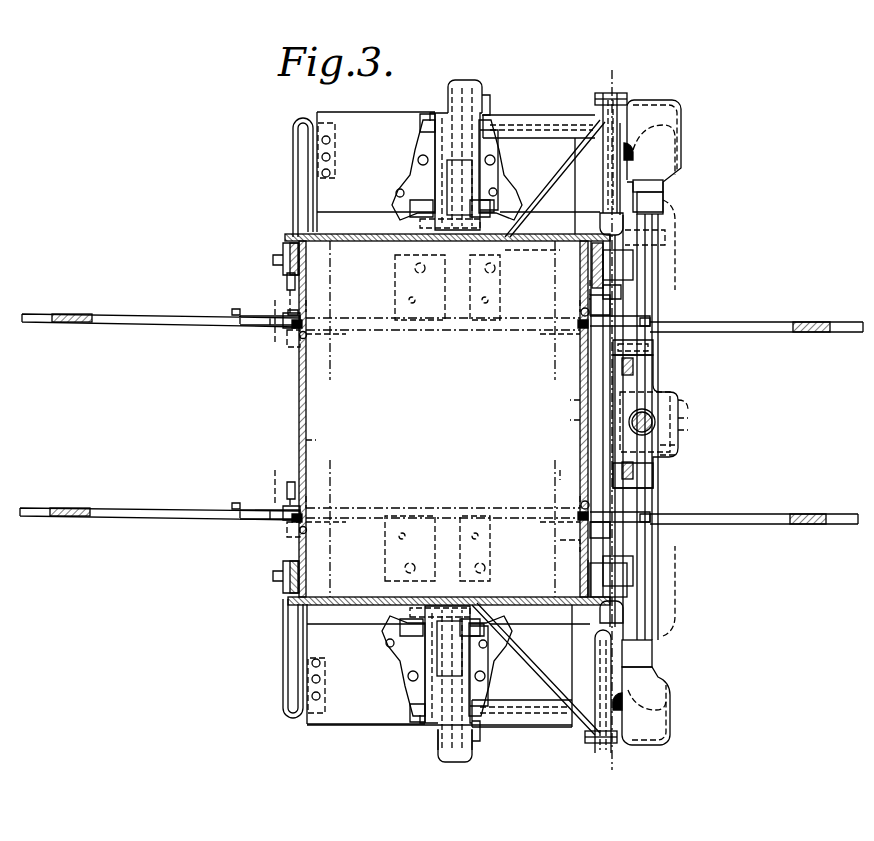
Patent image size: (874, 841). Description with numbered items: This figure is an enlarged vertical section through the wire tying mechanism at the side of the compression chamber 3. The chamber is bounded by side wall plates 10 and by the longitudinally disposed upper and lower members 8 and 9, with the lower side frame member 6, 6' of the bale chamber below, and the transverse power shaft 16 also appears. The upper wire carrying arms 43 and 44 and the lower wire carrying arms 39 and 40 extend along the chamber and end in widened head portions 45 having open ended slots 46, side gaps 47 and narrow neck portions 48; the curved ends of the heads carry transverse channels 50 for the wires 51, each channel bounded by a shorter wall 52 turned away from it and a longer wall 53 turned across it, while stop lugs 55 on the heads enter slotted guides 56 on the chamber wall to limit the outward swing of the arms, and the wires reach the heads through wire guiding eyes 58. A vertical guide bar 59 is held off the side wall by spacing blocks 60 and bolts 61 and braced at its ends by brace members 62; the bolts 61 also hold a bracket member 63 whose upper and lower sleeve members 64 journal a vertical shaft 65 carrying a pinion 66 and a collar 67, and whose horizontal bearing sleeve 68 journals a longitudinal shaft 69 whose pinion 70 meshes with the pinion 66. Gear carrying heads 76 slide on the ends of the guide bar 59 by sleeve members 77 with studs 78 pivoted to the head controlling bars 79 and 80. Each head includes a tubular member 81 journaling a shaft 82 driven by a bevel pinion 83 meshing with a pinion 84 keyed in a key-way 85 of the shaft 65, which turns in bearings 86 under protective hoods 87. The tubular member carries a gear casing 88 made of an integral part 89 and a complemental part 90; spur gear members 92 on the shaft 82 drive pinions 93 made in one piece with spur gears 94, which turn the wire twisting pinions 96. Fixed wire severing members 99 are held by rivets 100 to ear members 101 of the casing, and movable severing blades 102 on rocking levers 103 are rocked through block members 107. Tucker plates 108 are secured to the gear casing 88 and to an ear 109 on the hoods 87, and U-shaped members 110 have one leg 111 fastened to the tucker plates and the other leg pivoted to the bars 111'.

The compression chamber 3 is at (447, 419).
The lower side frame member 6 is at (426, 419).
The side plate 6' is at (569, 578).
The upper member 8 is at (290, 236).
The lower member 9 is at (290, 618).
The plates 10 is at (298, 436).
The transverse shaft 16 is at (622, 295).
The lower wire carrying arm 39 is at (786, 514).
The lower wire carrying arm 40 is at (140, 518).
The wire carrying arm 43 is at (756, 345).
The wire carrying arm 44 is at (185, 322).
The head portion 45 is at (265, 325).
The open ended slot 46 is at (287, 282).
The gap 47 is at (283, 315).
The neck portion 48 is at (245, 300).
The transverse channel 50 is at (288, 312).
The wire 51 is at (305, 322).
The shorter wall 52 is at (306, 338).
The longer wall 53 is at (308, 312).
The stop lug 55 is at (230, 310).
The guide 56 is at (287, 335).
The wire guiding eye 58 is at (310, 330).
The guide bar 59 is at (622, 94).
The spacing block 60 is at (578, 404).
The bolt 61 is at (634, 364).
The brace member 62 is at (500, 178).
The bracket member 63 is at (678, 390).
The sleeve member 64 is at (655, 350).
The vertical shaft 65 is at (665, 240).
The pinion 66 is at (690, 398).
The collar 67 is at (655, 440).
The bearing sleeve 68 is at (655, 412).
The longitudinally disposed shaft 69 is at (688, 418).
The pinion 70 is at (690, 430).
The gear carrying head 76 is at (684, 118).
The sleeve member 77 is at (660, 150).
The stud 78 is at (664, 200).
The bar 79 is at (635, 262).
The bar 80 is at (628, 580).
The tubular member 81 is at (510, 118).
The shaft 82 is at (548, 122).
The bevel pinion 83 is at (620, 100).
The pinion 84 is at (680, 140).
The key-way 85 is at (675, 225).
The bearing 86 is at (665, 183).
The hood 87 is at (680, 110).
The gear casing 88 is at (462, 78).
The part 89 is at (478, 85).
The complemental part 90 is at (452, 88).
The spur gear member 92 is at (490, 98).
The pinion 93 is at (496, 205).
The spur gear 94 is at (420, 128).
The wire twisting pinion 96 is at (445, 243).
The fixed wire severing member 99 is at (490, 243).
The rivet 100 is at (465, 535).
The ear member 101 is at (418, 223).
The movable wire severing blade 102 is at (408, 205).
The rocking lever 103 is at (416, 166).
The block member 107 is at (436, 115).
The tucker plate 108 is at (362, 130).
The ear 109 is at (598, 420).
The U-shaped member 110 is at (292, 140).
The leg 111 is at (283, 418).
The bar 111' is at (258, 411).